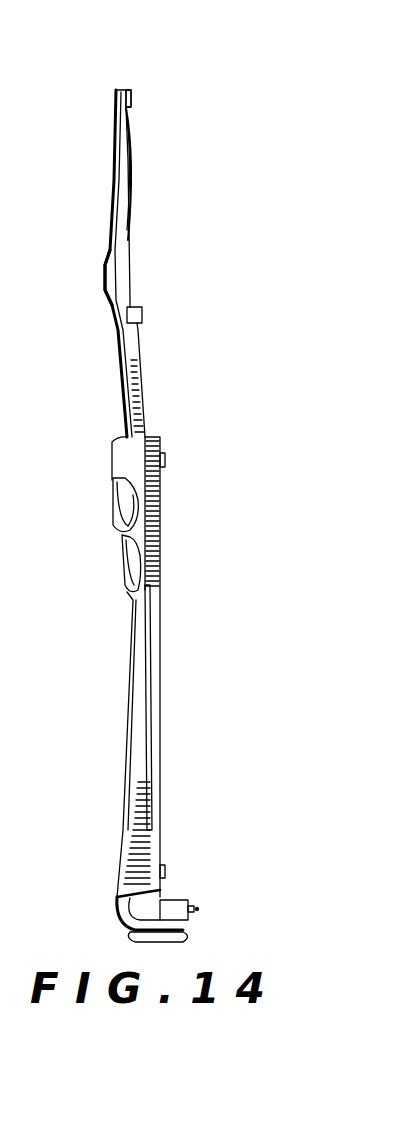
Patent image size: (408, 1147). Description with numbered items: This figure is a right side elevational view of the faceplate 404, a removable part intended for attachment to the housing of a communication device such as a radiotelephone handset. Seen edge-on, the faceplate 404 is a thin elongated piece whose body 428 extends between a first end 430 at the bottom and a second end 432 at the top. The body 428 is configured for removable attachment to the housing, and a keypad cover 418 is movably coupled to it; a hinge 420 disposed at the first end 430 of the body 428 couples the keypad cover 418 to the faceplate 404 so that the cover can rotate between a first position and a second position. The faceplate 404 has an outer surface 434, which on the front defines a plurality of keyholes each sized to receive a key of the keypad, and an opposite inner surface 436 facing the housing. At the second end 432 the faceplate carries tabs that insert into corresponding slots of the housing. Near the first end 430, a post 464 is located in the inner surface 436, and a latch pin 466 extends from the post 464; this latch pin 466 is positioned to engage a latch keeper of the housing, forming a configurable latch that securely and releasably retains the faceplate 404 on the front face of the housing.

The faceplate 404 is at (272, 558).
The keypad cover 418 is at (140, 628).
The hinge 420 is at (122, 915).
The body 428 is at (160, 487).
The first end 430 is at (190, 935).
The second end 432 is at (118, 90).
The outer surface 434 is at (110, 255).
The inner surface 436 is at (133, 163).
The post 464 is at (177, 900).
The latch pin 466 is at (198, 908).